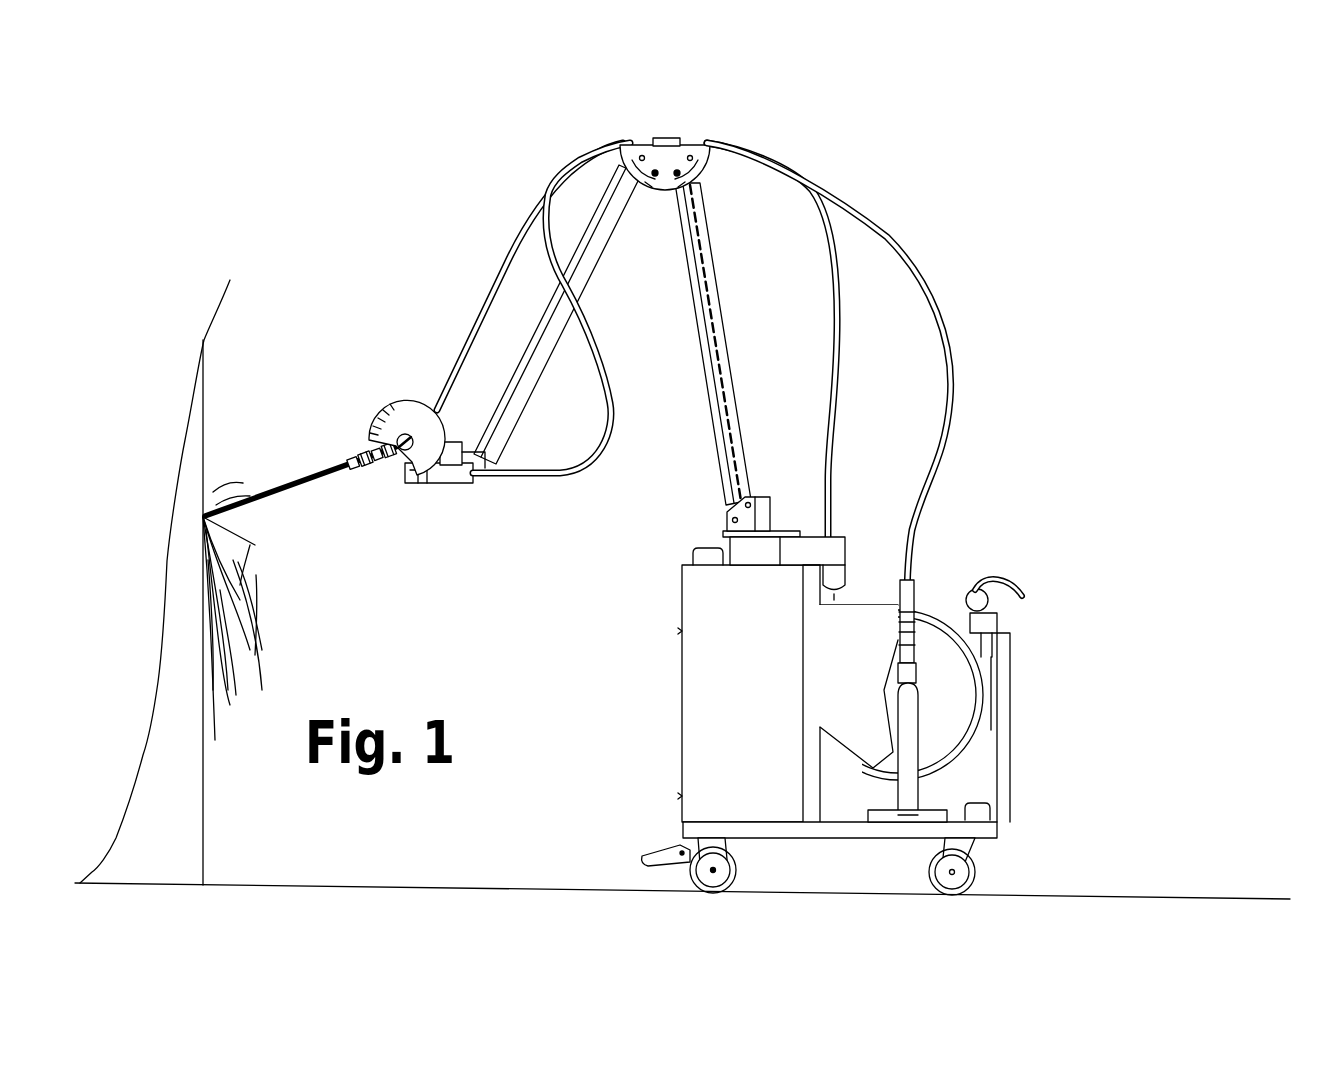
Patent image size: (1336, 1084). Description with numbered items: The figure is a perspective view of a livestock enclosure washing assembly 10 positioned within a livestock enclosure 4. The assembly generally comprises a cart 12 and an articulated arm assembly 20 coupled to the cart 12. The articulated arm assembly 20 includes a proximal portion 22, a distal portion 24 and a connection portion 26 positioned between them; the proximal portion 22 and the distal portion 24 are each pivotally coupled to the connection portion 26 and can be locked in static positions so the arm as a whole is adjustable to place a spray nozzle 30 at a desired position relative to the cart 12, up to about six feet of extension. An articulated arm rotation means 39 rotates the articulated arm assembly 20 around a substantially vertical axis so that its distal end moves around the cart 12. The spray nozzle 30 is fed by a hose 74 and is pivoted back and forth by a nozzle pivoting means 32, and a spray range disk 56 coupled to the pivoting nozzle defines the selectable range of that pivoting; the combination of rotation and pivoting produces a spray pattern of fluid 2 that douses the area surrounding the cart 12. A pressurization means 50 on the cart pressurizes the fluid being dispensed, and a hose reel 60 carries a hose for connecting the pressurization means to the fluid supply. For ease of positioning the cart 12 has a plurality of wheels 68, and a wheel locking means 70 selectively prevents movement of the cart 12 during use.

The fluid 2 is at (270, 506).
The livestock enclosure 4 is at (167, 841).
The livestock enclosure washing assembly 10 is at (988, 168).
The cart 12 is at (858, 687).
The articulated arm assembly 20 is at (712, 127).
The proximal portion 22 is at (720, 302).
The distal portion 24 is at (617, 250).
The connection portion 26 is at (662, 160).
The spray nozzle 30 is at (356, 455).
The nozzle pivoting means 32 is at (460, 470).
The articulated arm rotation means 39 is at (763, 512).
The pressurization means 50 is at (910, 640).
The spray range disk 56 is at (411, 408).
The hose reel 60 is at (962, 682).
The wheels 68 is at (738, 870).
The wheel locking means 70 is at (655, 853).
The hose 74 is at (912, 262).